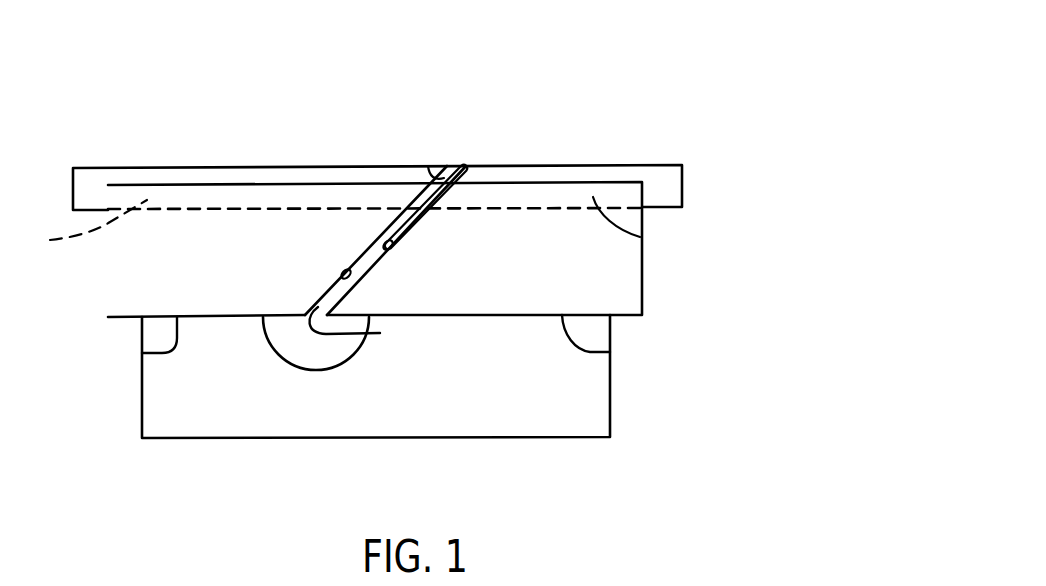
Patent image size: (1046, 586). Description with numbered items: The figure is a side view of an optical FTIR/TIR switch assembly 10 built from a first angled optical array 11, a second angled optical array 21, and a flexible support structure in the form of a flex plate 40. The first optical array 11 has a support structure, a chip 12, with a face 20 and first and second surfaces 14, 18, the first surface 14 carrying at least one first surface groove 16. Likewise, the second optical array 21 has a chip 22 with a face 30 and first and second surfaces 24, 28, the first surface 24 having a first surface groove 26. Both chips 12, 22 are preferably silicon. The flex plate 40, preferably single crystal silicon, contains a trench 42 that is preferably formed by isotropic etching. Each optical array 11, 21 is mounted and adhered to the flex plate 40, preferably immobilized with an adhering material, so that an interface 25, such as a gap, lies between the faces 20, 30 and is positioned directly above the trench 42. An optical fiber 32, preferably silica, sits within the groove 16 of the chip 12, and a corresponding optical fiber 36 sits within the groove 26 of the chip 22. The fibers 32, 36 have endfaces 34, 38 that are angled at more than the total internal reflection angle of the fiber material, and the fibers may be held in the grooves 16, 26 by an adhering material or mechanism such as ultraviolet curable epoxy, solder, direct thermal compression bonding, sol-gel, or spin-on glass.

The optical FTIR/TIR switch assembly 10 is at (660, 60).
The first angled optical array 11 is at (599, 169).
The chip 12 is at (618, 280).
The first surface 14 is at (636, 180).
The first surface groove 16 is at (652, 238).
The second surface 18 is at (610, 351).
The face 20 is at (393, 247).
The second angled optical array 21 is at (291, 197).
The chip 22 is at (120, 280).
The first surface 24 is at (132, 186).
The interface 25 is at (380, 333).
The first surface groove 26 is at (82, 228).
The second surface 28 is at (142, 353).
The face 30 is at (341, 273).
The optical fiber 32 is at (560, 175).
The endface 34 is at (472, 167).
The optical fiber 36 is at (223, 173).
The endface 38 is at (425, 166).
The flex plate 40 is at (577, 405).
The trench 42 is at (305, 350).